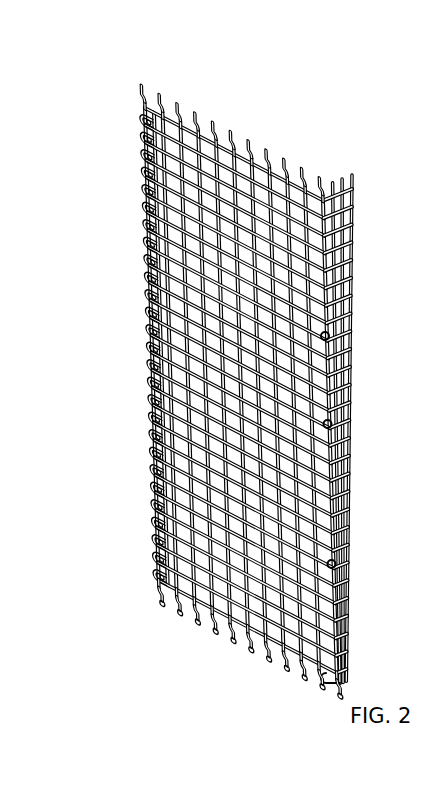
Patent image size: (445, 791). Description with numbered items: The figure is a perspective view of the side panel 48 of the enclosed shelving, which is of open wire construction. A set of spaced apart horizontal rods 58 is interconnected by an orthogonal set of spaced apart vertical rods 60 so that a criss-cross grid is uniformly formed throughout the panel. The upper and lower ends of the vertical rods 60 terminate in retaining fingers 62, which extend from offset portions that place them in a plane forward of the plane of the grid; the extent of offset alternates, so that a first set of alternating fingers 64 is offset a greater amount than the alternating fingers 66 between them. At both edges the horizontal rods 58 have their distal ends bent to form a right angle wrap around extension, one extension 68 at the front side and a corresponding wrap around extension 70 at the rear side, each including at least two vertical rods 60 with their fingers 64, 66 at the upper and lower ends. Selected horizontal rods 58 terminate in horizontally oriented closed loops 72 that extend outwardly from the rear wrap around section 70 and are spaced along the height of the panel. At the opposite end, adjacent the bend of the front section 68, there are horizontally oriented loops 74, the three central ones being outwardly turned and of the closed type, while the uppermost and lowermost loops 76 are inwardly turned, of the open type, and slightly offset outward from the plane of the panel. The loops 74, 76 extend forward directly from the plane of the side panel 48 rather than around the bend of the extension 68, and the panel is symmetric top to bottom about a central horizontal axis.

The side panel 48 is at (276, 146).
The horizontal rods 58 is at (280, 395).
The vertical rods 60 is at (350, 235).
The retaining fingers 62 is at (270, 384).
The first set of alternating fingers 64 is at (184, 112).
The alternating fingers 66 is at (178, 106).
The wrap around extension 68 is at (358, 258).
The wrap around extension 70 is at (152, 158).
The closed loops 72 is at (193, 103).
The loops 74 is at (343, 355).
The loops 76 is at (356, 665).